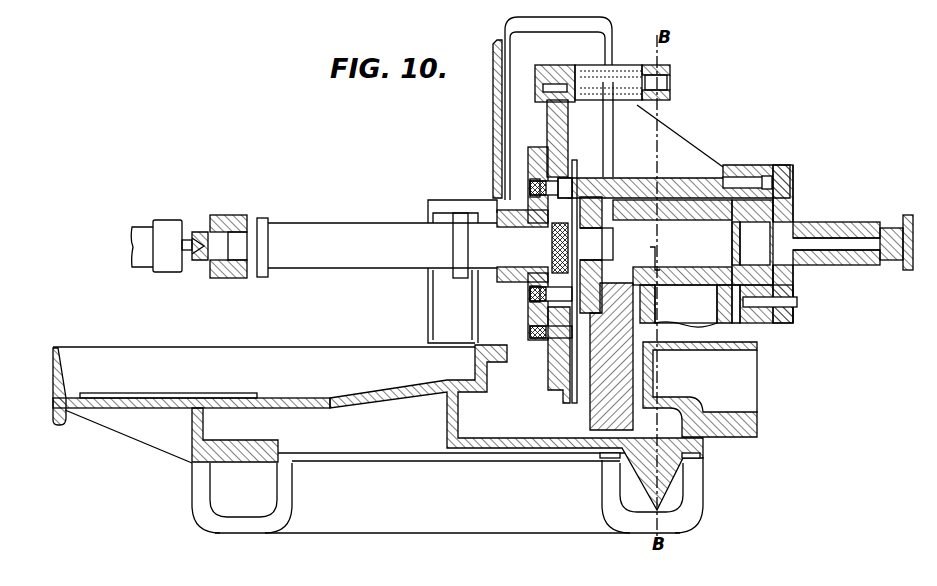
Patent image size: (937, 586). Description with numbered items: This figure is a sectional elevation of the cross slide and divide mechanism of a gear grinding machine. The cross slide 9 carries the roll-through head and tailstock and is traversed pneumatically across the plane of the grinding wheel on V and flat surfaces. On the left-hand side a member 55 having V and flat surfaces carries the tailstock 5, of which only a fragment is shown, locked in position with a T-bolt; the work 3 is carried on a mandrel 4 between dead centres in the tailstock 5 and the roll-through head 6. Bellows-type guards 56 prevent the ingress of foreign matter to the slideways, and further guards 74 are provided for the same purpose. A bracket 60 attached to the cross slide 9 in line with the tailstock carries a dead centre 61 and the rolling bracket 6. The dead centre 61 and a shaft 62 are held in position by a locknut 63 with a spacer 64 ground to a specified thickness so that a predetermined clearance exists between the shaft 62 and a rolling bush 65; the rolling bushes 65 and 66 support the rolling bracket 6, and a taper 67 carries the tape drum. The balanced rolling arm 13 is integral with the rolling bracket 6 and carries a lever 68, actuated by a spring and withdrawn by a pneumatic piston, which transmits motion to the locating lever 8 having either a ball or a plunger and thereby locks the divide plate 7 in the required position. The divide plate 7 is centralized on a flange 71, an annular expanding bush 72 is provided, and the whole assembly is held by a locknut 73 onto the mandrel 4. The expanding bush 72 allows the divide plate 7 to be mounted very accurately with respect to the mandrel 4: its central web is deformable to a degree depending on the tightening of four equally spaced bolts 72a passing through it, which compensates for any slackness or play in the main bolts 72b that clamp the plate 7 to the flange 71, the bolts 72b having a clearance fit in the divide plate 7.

The work 3 is at (228, 220).
The mandrel 4 is at (377, 247).
The tailstock 5 is at (167, 226).
The roll-through head 6 is at (682, 259).
The master divide plate 7 is at (547, 122).
The locating lever 8 is at (560, 68).
The cross slide 9 is at (378, 408).
The roll-through arm 13 is at (709, 140).
The member having V and flat surfaces 55 is at (222, 398).
The bellows-type guards 56 is at (192, 486).
The bracket 60 is at (727, 333).
The dead centre 61 is at (566, 243).
The shaft 62 is at (693, 242).
The locknut 63 is at (725, 285).
The spacer 64 is at (650, 274).
The rolling bush 65 is at (624, 300).
The rolling bush 66 is at (740, 288).
The taper 67 is at (855, 258).
The lever 68 is at (670, 94).
The flange 71 is at (527, 285).
The annular expanding bush 72 is at (568, 182).
The bolts 72a is at (553, 185).
The main bolts 72b is at (565, 174).
The locknut 73 is at (548, 230).
The guards 74 is at (512, 20).